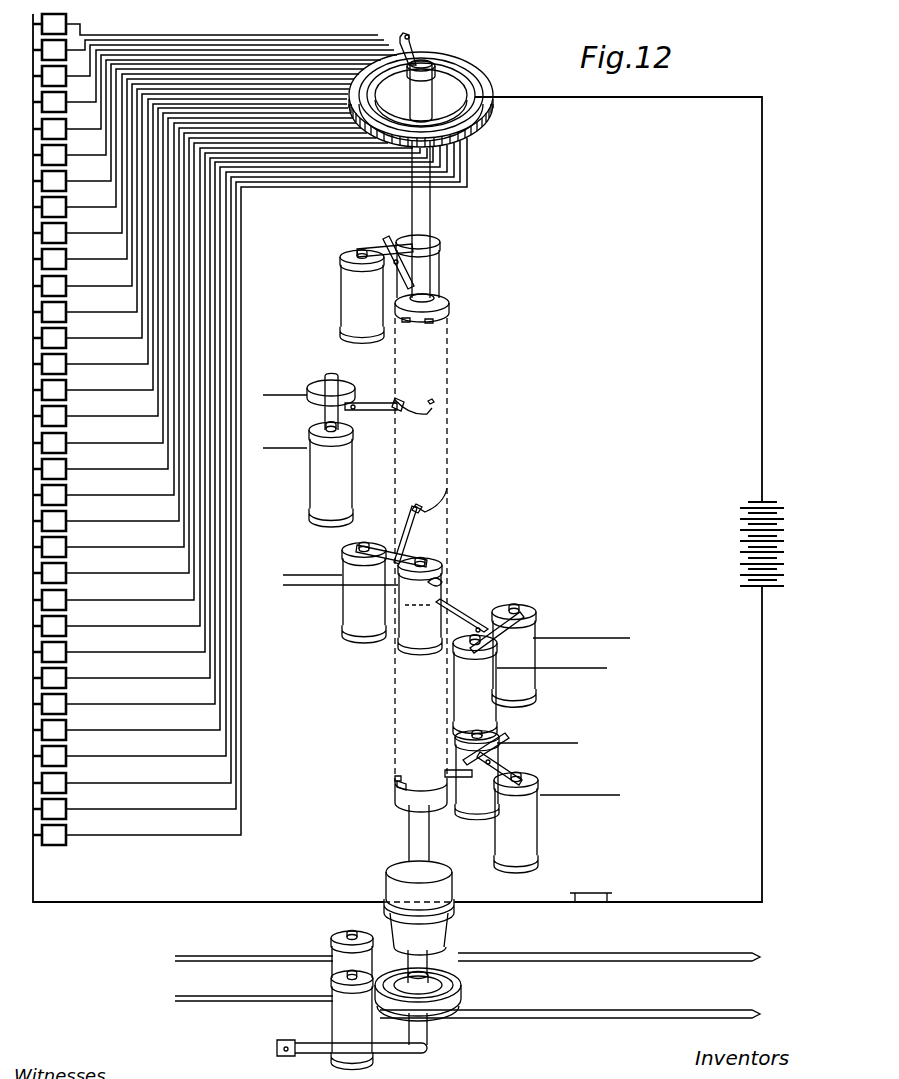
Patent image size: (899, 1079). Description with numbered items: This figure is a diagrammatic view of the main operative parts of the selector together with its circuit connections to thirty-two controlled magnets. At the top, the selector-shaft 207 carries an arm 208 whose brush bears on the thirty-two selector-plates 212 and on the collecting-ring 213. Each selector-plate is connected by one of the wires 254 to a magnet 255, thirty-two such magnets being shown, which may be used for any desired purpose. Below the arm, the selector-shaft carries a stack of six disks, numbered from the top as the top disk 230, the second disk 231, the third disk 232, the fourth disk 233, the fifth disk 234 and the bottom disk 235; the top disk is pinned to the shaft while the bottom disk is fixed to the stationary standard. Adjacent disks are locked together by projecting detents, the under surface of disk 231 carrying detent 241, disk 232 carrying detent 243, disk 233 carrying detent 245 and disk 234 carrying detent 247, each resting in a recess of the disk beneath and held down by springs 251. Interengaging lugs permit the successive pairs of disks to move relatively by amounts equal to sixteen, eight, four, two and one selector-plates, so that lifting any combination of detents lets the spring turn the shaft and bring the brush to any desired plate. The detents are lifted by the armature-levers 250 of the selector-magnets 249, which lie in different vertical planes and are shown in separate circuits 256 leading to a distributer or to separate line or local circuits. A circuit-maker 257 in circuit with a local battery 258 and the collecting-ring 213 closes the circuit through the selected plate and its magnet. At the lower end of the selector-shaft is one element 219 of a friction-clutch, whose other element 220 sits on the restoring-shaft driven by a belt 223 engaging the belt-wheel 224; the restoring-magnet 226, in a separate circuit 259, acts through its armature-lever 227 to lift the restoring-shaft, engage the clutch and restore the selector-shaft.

The selector-shaft 207 is at (422, 215).
The arm 208 is at (416, 52).
The selector-plates 212 is at (468, 138).
The collecting-ring 213 is at (458, 88).
The friction-clutch element 219 is at (453, 885).
The friction-clutch element 220 is at (452, 925).
The belt 223 is at (467, 977).
The belt-wheel 224 is at (462, 985).
The restoring-magnet 226 is at (338, 1000).
The armature-lever 227 is at (395, 1056).
The top disk 230 is at (448, 305).
The second disk 231 is at (440, 407).
The third disk 232 is at (447, 497).
The fourth disk 233 is at (445, 598).
The fifth disk 234 is at (398, 776).
The bottom disk 235 is at (398, 800).
The detent 241 is at (388, 412).
The detent 243 is at (408, 522).
The detent 245 is at (458, 614).
The detent 247 is at (396, 786).
The selector-magnets 249 is at (435, 554).
The armature-levers 250 is at (400, 250).
The springs 251 is at (409, 402).
The wires 254 is at (266, 427).
The magnet 255 is at (58, 14).
The circuits 256 is at (563, 709).
The circuit-maker 257 is at (591, 886).
The local battery 258 is at (778, 544).
The circuit 259 is at (254, 948).